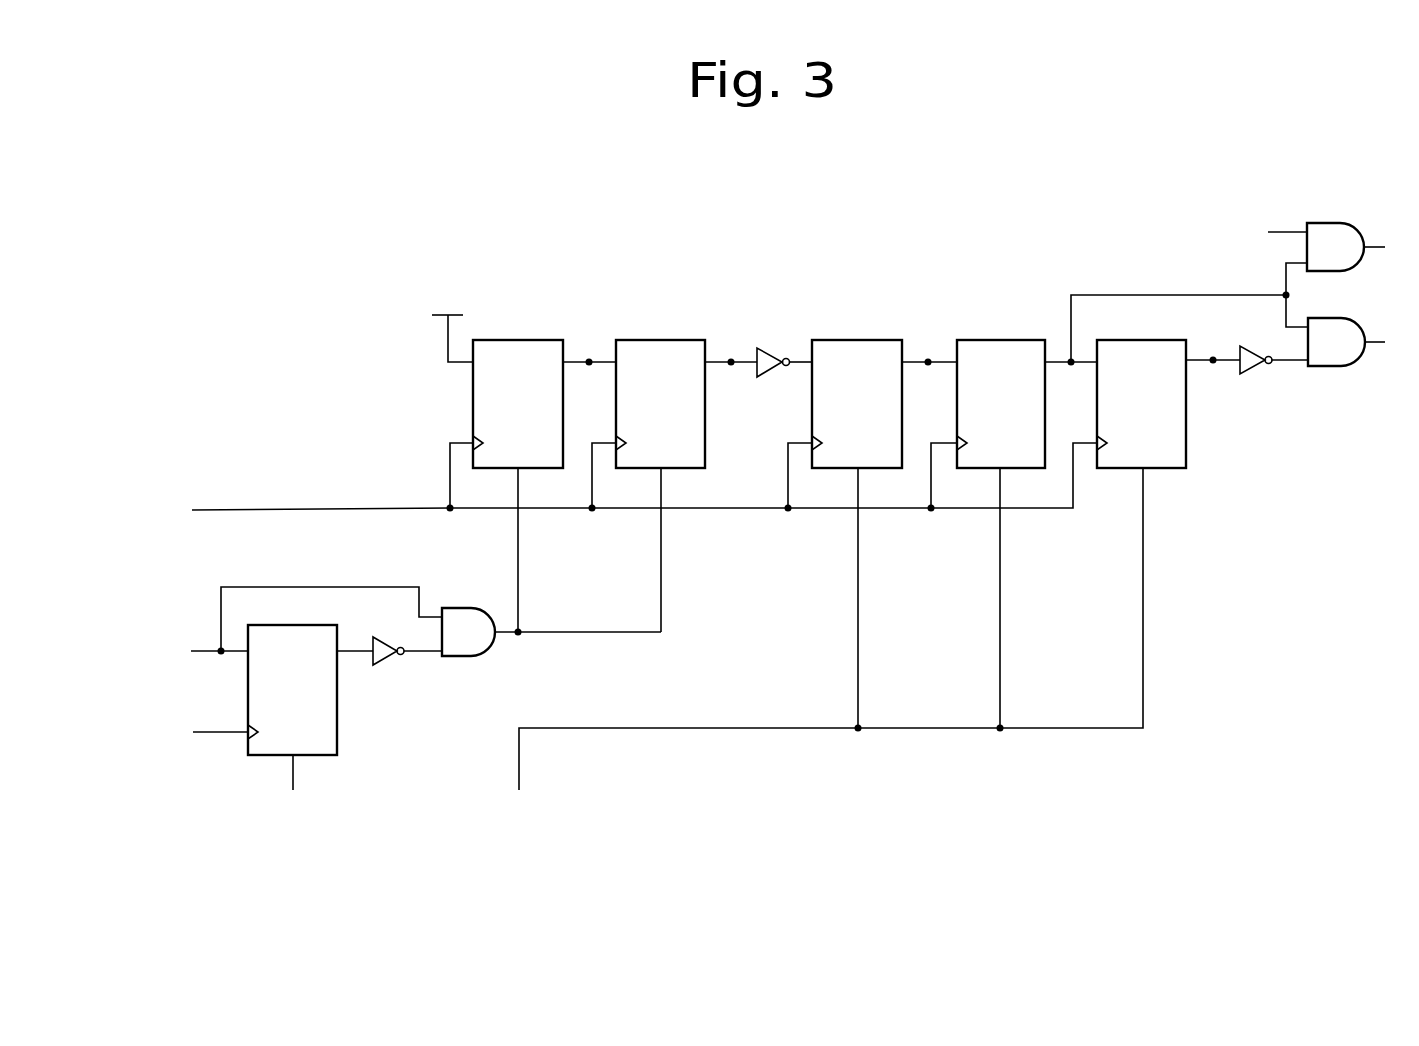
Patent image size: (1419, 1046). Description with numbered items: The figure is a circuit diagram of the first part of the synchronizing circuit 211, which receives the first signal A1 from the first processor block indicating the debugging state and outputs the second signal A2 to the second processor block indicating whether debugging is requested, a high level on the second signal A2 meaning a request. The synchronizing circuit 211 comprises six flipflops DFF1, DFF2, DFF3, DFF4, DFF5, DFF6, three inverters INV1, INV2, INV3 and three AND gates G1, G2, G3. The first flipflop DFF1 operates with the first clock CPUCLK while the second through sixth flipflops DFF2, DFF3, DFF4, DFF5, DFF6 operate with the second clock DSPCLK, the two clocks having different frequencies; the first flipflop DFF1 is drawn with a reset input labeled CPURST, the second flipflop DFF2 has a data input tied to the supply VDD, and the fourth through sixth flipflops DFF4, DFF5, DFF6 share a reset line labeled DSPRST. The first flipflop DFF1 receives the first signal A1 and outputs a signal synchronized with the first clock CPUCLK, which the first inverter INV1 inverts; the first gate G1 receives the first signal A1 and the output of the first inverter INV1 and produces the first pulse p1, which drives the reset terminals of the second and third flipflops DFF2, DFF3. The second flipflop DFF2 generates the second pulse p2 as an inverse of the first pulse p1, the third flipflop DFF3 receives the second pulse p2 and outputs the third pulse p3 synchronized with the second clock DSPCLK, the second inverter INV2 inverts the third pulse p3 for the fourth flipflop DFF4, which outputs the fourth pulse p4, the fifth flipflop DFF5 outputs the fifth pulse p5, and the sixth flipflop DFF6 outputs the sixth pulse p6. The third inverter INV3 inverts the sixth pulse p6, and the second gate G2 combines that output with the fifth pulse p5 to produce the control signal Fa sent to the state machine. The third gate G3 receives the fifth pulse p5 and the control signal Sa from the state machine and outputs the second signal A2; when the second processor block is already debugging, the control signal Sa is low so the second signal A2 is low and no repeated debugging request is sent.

The synchronizing circuit 211 is at (372, 182).
The first flipflop DFF1 is at (292, 690).
The second flipflop DFF2 is at (518, 404).
The third flipflop DFF3 is at (660, 404).
The fourth flipflop DFF4 is at (857, 404).
The fifth flipflop DFF5 is at (1001, 404).
The sixth flipflop DFF6 is at (1141, 404).
The first inverter INV1 is at (389, 666).
The second inverter INV2 is at (771, 355).
The third inverter INV3 is at (1256, 375).
The first gate G1 is at (468, 632).
The second gate G2 is at (1336, 342).
The third gate G3 is at (1335, 247).
The first pulse p1 is at (578, 644).
The second pulse p2 is at (589, 351).
The third pulse p3 is at (731, 351).
The fourth pulse p4 is at (929, 351).
The fifth pulse p5 is at (1176, 326).
The sixth pulse p6 is at (1247, 349).
The supply voltage VDD is at (452, 327).
The first signal A1 is at (303, 625).
The first clock CPUCLK is at (185, 733).
The CPU reset signal CPURST is at (292, 786).
The second clock DSPCLK is at (607, 483).
The DSP reset signal DSPRST is at (814, 643).
The control signal Sa is at (1273, 233).
The second signal A2 is at (1390, 248).
The control signal Fa is at (1390, 343).